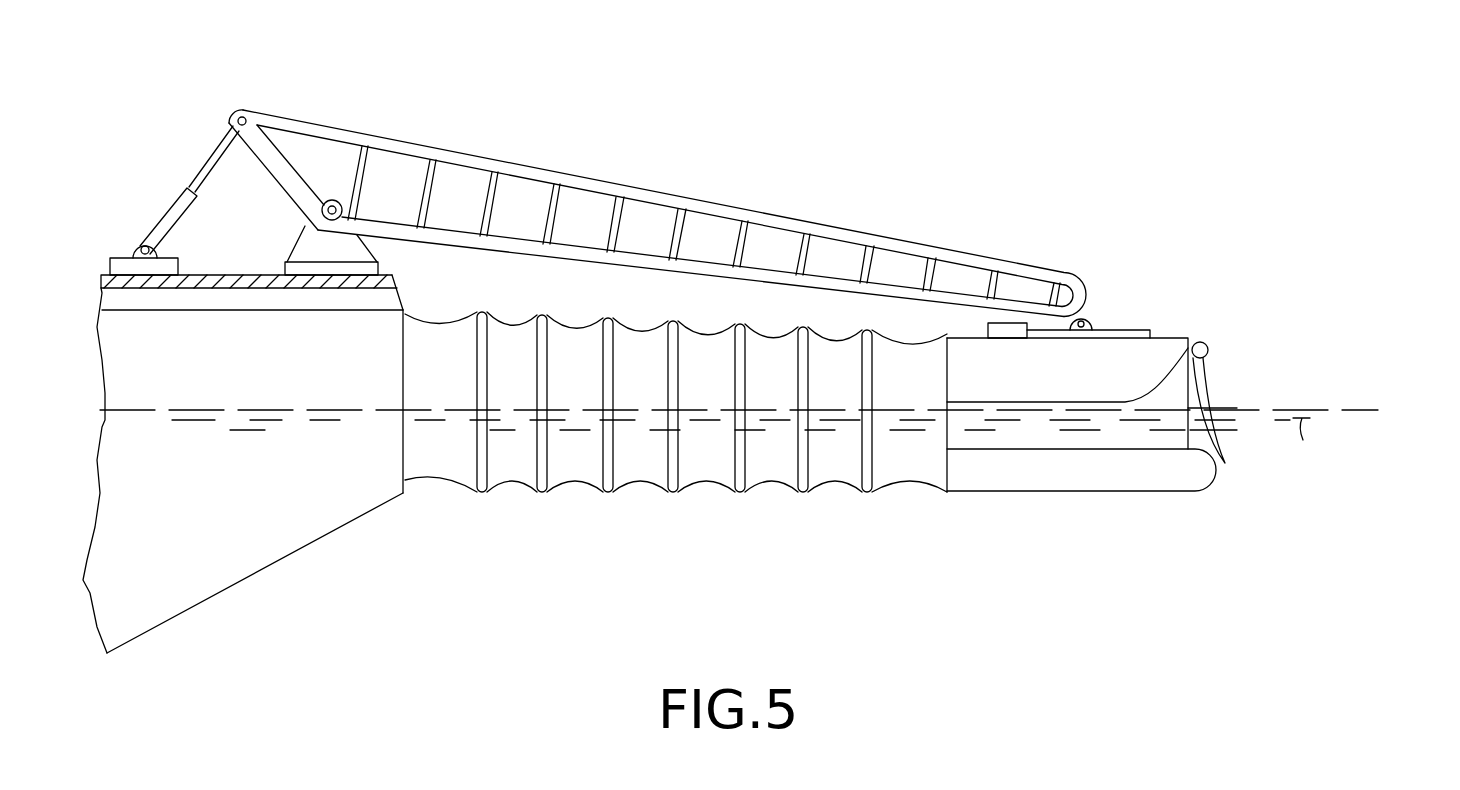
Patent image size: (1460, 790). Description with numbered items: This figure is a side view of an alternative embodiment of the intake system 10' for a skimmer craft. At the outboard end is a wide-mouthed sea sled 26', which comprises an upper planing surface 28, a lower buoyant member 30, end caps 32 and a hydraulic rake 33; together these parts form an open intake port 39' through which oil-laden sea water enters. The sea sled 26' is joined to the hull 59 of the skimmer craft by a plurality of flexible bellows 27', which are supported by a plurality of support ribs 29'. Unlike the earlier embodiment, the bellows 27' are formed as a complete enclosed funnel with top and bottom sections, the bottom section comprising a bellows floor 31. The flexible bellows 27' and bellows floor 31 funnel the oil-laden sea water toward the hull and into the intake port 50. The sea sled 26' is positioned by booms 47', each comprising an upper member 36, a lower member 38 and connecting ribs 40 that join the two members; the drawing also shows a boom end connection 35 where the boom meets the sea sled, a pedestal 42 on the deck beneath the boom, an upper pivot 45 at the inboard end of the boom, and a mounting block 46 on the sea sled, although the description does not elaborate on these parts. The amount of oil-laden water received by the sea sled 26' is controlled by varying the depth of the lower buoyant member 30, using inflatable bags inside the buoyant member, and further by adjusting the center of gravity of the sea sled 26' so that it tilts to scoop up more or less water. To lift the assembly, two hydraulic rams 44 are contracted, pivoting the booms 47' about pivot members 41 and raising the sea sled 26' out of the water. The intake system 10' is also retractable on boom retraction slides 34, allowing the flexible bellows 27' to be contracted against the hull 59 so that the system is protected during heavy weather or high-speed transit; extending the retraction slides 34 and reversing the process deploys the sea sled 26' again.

The intake system 10' is at (765, 357).
The wide-mouthed sea sled 26' is at (843, 465).
The flexible bellows 27' is at (676, 437).
The upper planing surface 28 is at (1160, 353).
The support ribs 29' is at (674, 433).
The lower buoyant member 30 is at (1158, 470).
The bellows floor 31 is at (626, 487).
The end caps 32 is at (963, 440).
The hydraulic rake 33 is at (1214, 375).
The boom retraction slides 34 is at (226, 280).
The boom end pivot 35 is at (1083, 308).
The upper member 36 is at (303, 126).
The lower member 38 is at (691, 272).
The intake port 39' is at (1219, 435).
The connecting ribs 40 is at (550, 200).
The pivot members 41 is at (306, 211).
The pedestal support 42 is at (320, 253).
The hydraulic rams 44 is at (181, 197).
The upper pivot 45 is at (243, 116).
The mounting block 46 is at (985, 333).
The booms 47' is at (657, 187).
The intake port 50 is at (403, 387).
The hull 59 is at (252, 575).